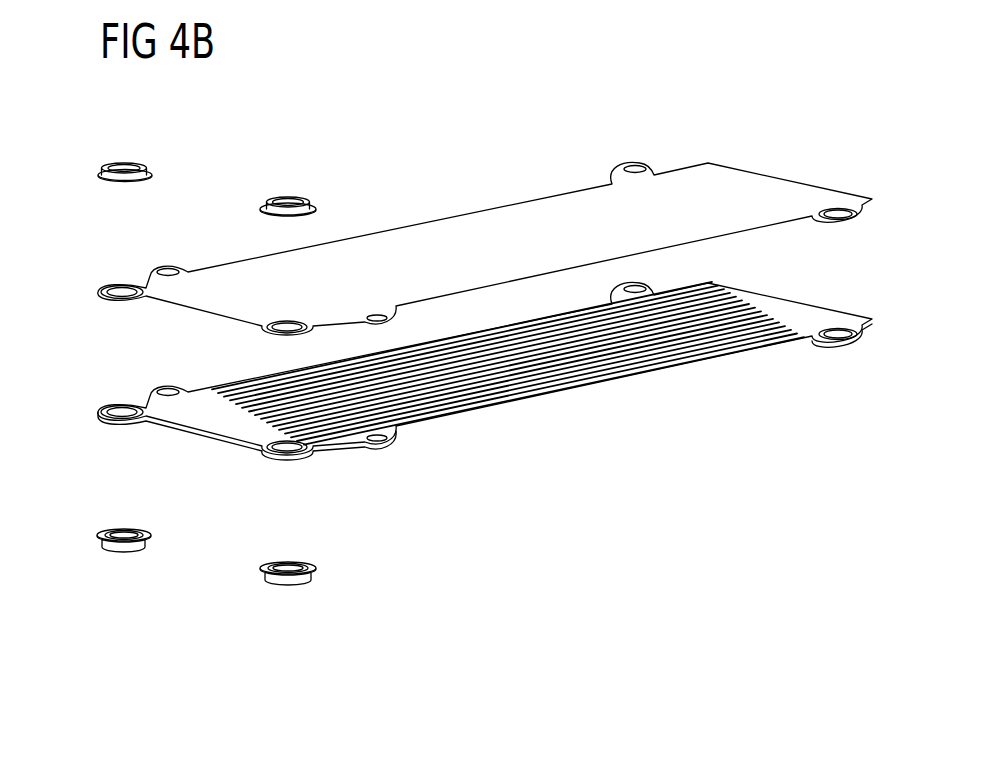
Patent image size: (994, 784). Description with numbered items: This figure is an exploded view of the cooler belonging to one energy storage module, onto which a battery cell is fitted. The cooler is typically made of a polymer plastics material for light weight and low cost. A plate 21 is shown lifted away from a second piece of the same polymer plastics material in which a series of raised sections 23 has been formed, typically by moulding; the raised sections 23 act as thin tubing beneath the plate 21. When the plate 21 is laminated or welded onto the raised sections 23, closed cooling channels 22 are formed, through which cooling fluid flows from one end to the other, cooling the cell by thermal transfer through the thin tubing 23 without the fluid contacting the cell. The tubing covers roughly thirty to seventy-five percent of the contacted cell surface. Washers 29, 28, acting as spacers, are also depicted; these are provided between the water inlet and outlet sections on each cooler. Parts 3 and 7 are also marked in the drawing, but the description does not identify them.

The cooling plate 3 is at (122, 408).
The fastening opening 7 is at (293, 455).
The plate 21 is at (482, 227).
The cooling channels 22 is at (522, 355).
The raised sections 23 is at (520, 333).
The washer 28 is at (289, 197).
The washer 29 is at (126, 163).